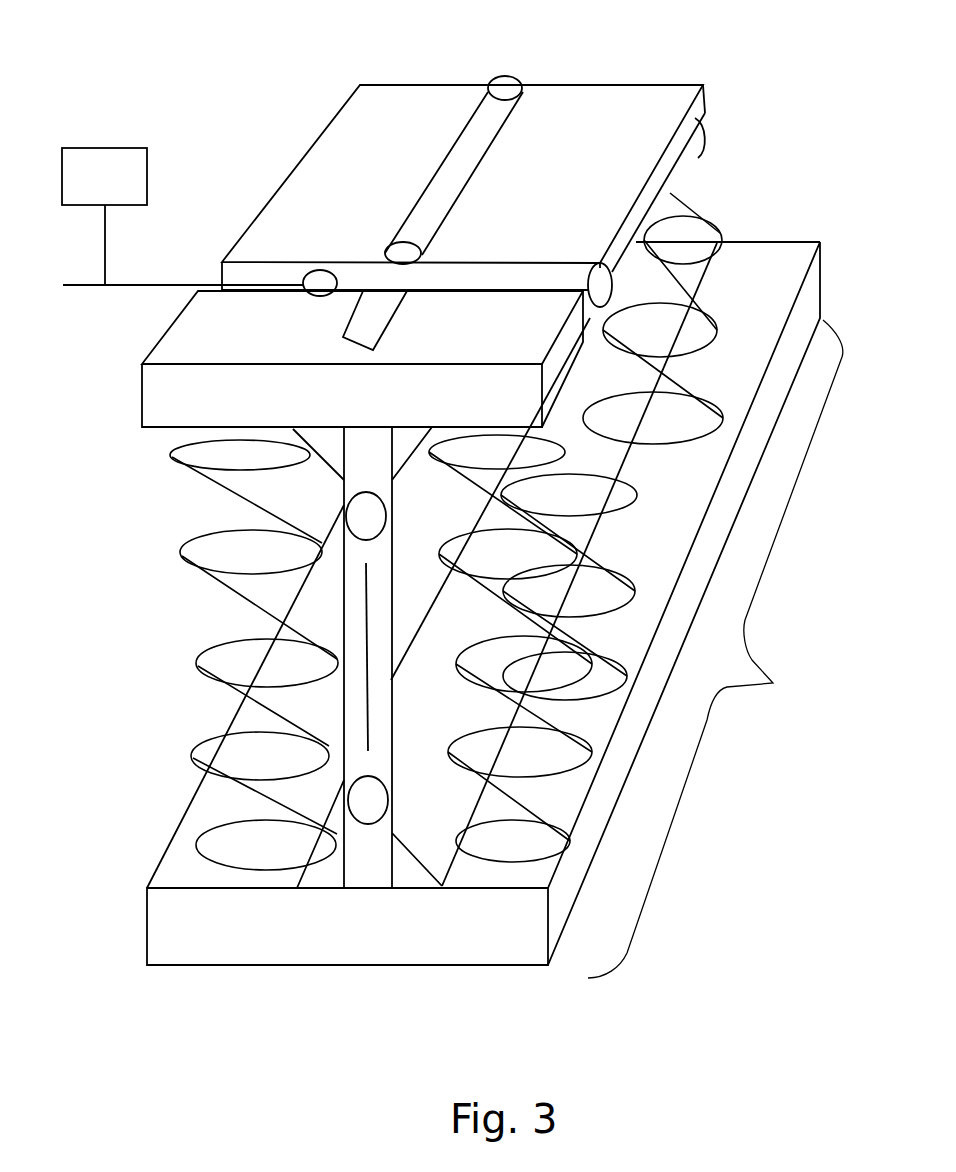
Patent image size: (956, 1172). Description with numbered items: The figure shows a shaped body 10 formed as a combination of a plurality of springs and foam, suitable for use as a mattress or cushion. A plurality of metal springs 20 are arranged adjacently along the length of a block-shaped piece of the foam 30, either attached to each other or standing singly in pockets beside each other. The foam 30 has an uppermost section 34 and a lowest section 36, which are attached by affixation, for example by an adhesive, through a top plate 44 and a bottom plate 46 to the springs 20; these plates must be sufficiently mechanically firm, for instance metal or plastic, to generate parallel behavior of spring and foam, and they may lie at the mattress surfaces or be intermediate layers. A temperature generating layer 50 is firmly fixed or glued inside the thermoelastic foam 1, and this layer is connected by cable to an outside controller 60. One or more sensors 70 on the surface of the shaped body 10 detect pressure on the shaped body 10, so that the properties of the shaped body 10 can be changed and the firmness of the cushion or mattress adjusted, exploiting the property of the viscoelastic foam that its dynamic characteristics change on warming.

The shaped body 10 is at (210, 118).
The outside controller 60 is at (104, 176).
The sensor 70 is at (167, 252).
The top plate 44 is at (192, 322).
The uppermost section of the foam 34 is at (175, 455).
The temperature generating layer 50 is at (370, 596).
The thermoelastic foam 1 is at (370, 566).
The foam section 30 is at (367, 868).
The lowest section of the foam 36 is at (293, 882).
The bottom plate 46 is at (210, 957).
The spring 20 is at (715, 649).